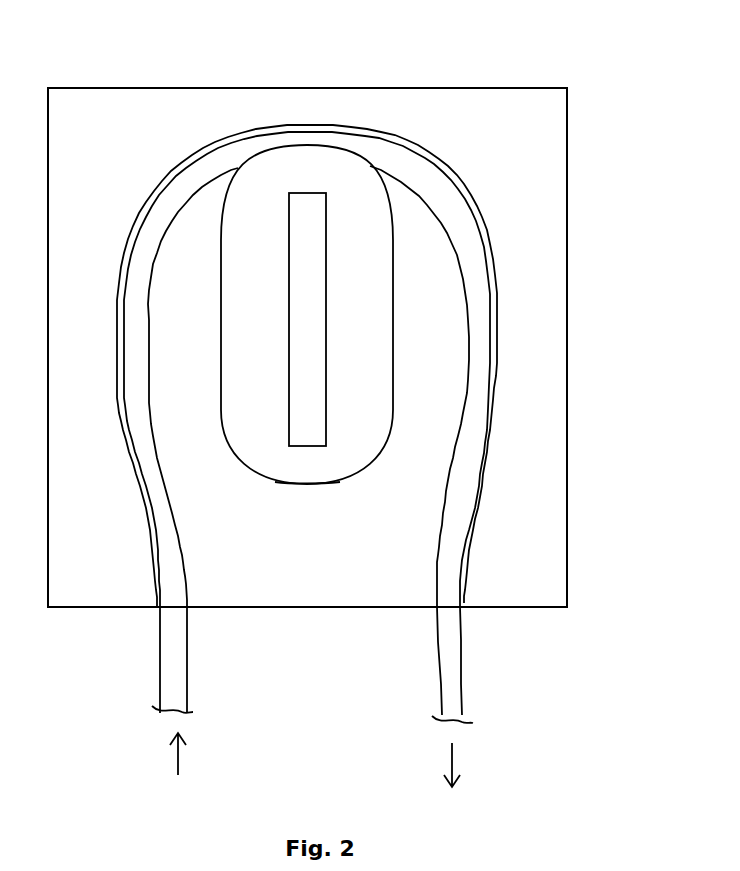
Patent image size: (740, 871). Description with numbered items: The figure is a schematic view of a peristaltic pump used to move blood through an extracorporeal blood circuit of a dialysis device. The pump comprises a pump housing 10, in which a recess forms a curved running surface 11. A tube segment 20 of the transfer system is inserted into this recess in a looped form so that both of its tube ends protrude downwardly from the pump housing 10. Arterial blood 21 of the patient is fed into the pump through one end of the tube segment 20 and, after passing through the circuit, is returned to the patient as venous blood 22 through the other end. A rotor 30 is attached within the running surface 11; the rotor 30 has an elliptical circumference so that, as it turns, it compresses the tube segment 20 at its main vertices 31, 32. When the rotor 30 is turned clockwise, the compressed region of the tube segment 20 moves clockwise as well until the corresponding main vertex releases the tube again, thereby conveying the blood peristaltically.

The pump housing 10 is at (556, 428).
The curved running surface 11 is at (408, 142).
The tube segment 20 is at (470, 245).
The arterial blood 21 is at (172, 757).
The venous blood 22 is at (458, 763).
The rotor 30 is at (233, 358).
The main vertex 31 is at (310, 147).
The main vertex 32 is at (310, 485).